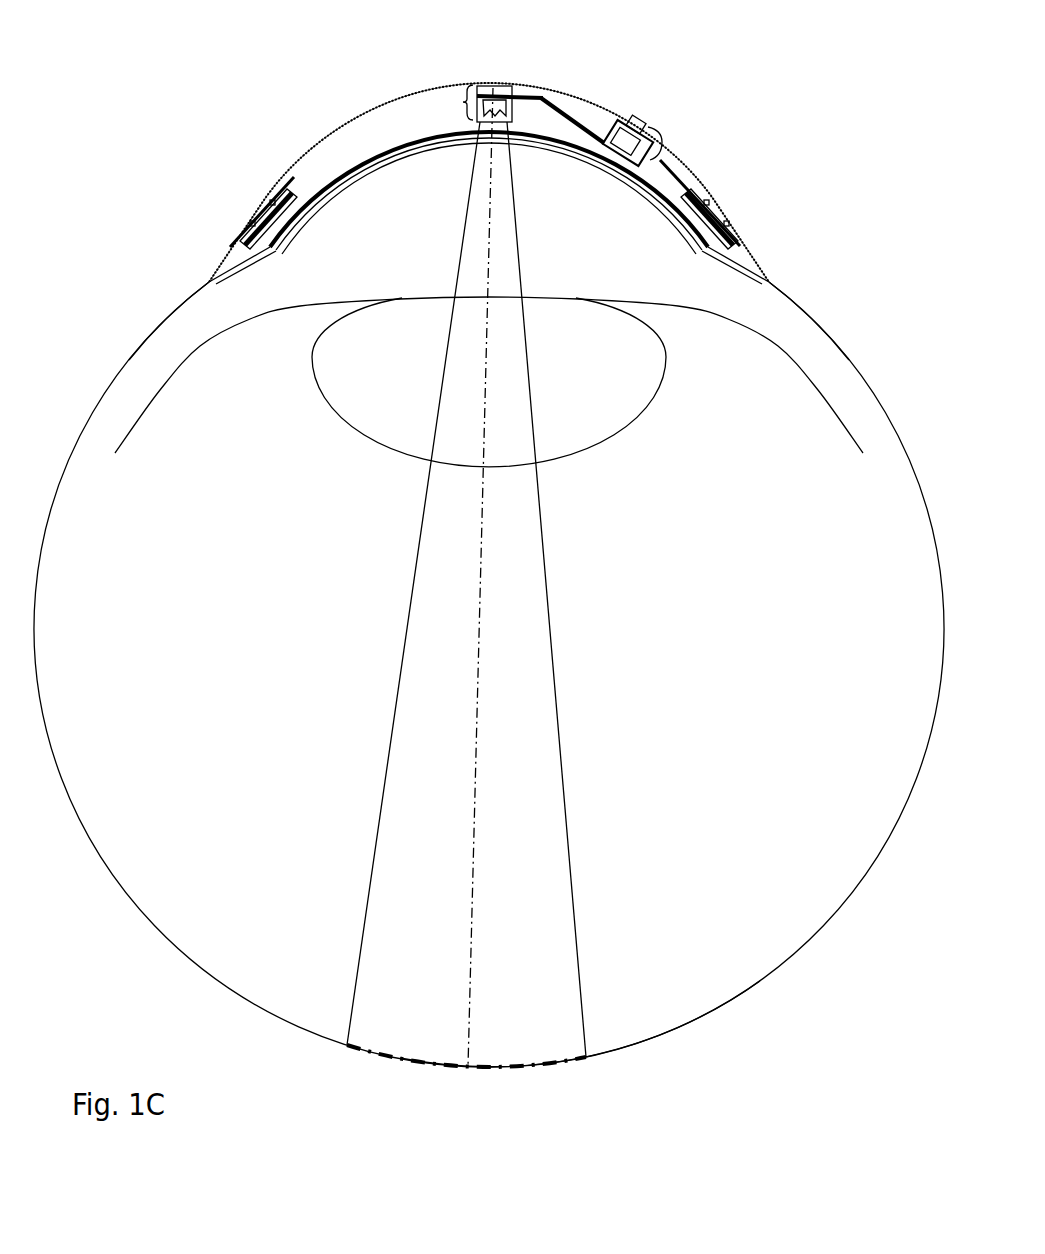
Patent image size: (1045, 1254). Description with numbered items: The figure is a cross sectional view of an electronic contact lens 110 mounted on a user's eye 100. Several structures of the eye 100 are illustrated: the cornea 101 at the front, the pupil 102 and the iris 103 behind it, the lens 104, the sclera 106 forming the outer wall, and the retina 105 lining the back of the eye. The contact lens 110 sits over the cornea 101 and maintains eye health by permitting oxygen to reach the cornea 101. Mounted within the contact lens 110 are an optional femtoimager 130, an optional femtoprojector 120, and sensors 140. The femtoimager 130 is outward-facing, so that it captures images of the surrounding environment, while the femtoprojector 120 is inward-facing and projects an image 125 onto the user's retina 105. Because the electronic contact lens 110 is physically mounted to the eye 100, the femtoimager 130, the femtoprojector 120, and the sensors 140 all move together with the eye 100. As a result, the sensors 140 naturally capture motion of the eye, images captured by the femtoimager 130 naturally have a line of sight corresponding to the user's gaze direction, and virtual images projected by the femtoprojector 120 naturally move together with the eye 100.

The eye 100 is at (745, 536).
The cornea 101 is at (450, 221).
The pupil 102 is at (537, 266).
The iris 103 is at (412, 287).
The lens 104 is at (417, 375).
The retina 105 is at (673, 1028).
The sclera 106 is at (727, 267).
The electronic contact lens 110 is at (205, 252).
The femtoprojector 120 is at (464, 102).
The image 125 is at (590, 1062).
The femtoimager 130 is at (663, 143).
The sensors 140 is at (720, 227).